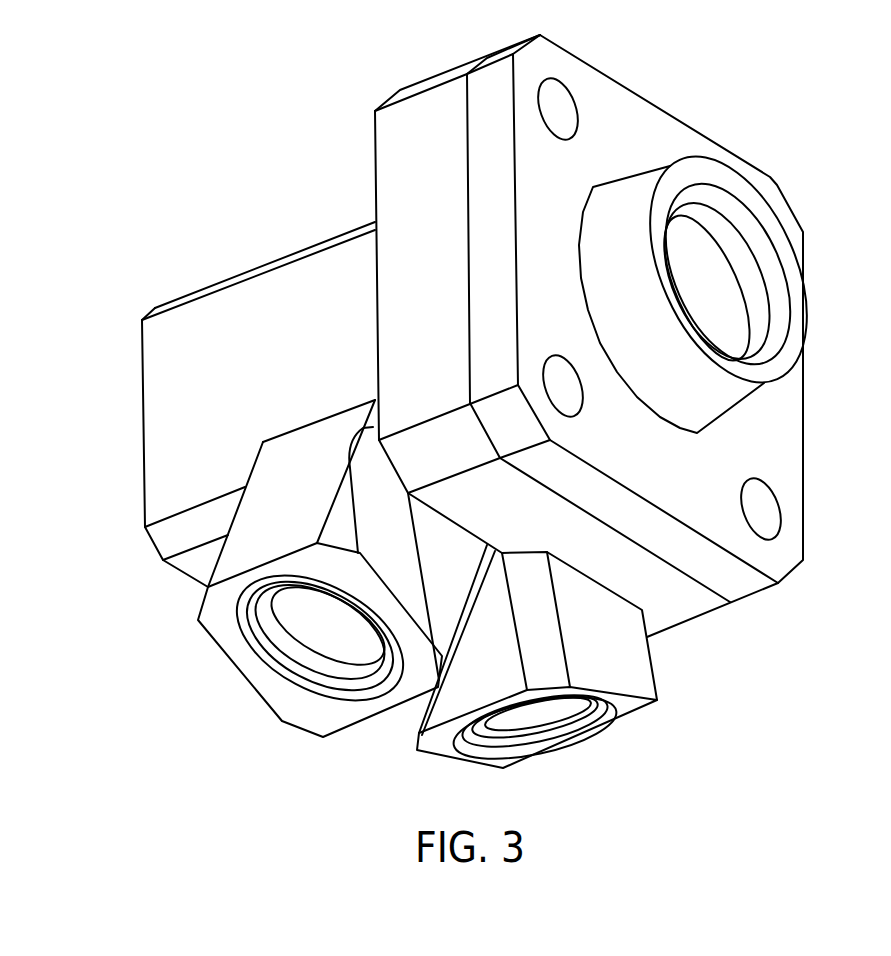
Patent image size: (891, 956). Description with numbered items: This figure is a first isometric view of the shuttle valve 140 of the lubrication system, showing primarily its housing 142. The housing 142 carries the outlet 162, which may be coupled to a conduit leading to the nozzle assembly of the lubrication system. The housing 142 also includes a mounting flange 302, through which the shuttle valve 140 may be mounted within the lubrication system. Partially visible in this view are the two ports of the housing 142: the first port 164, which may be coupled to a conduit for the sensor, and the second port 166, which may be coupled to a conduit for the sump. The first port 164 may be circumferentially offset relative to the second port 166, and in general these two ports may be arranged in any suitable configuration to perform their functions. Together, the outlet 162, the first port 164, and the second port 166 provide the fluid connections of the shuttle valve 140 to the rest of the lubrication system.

The shuttle valve 140 is at (238, 175).
The housing 142 is at (228, 278).
The outlet 162 is at (757, 238).
The first port 164 is at (265, 662).
The second port 166 is at (550, 743).
The mounting flange 302 is at (667, 111).